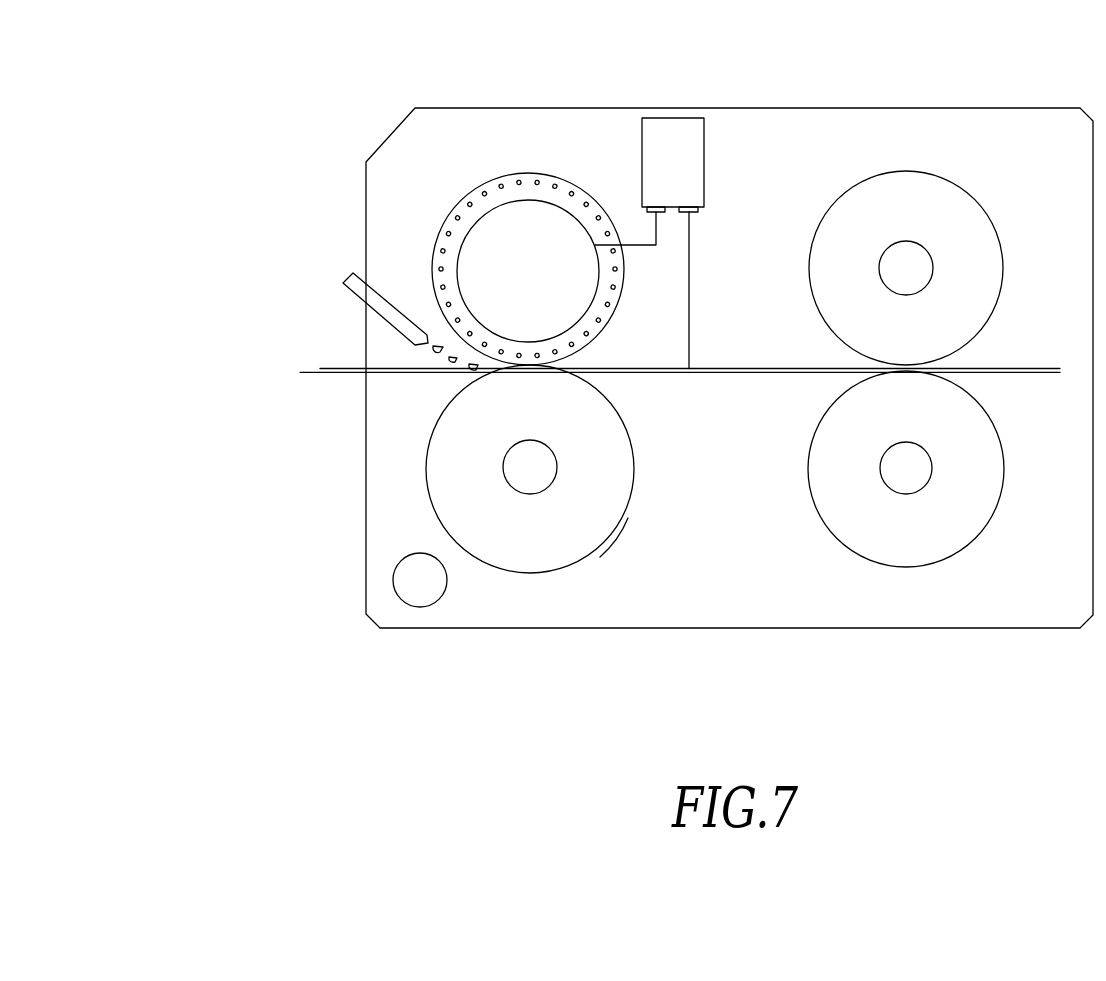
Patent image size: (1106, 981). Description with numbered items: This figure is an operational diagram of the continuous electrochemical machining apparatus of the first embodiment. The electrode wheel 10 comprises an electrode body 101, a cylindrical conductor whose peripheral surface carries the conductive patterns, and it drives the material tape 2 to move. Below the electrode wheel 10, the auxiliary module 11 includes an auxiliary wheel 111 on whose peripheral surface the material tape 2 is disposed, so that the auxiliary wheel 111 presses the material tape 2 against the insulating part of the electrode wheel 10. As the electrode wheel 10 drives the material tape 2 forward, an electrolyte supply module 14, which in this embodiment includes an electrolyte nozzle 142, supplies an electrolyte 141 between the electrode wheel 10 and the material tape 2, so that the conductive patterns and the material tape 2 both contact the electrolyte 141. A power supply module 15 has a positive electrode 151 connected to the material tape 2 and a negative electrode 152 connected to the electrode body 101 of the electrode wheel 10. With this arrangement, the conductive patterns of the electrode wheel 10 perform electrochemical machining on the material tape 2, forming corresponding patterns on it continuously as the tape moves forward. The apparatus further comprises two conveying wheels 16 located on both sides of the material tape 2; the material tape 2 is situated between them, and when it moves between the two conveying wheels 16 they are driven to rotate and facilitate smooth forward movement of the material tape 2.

The material tape 2 is at (320, 368).
The electrode wheel 10 is at (460, 183).
The electrode body 101 is at (523, 200).
The auxiliary module 11 is at (523, 585).
The auxiliary wheel 111 is at (621, 519).
The electrolyte supply module 14 is at (334, 343).
The electrolyte 141 is at (437, 350).
The electrolyte nozzle 142 is at (381, 314).
The power supply module 15 is at (673, 118).
The positive electrode 151 is at (700, 208).
The negative electrode 152 is at (665, 211).
The conveying wheels 16 is at (918, 172).